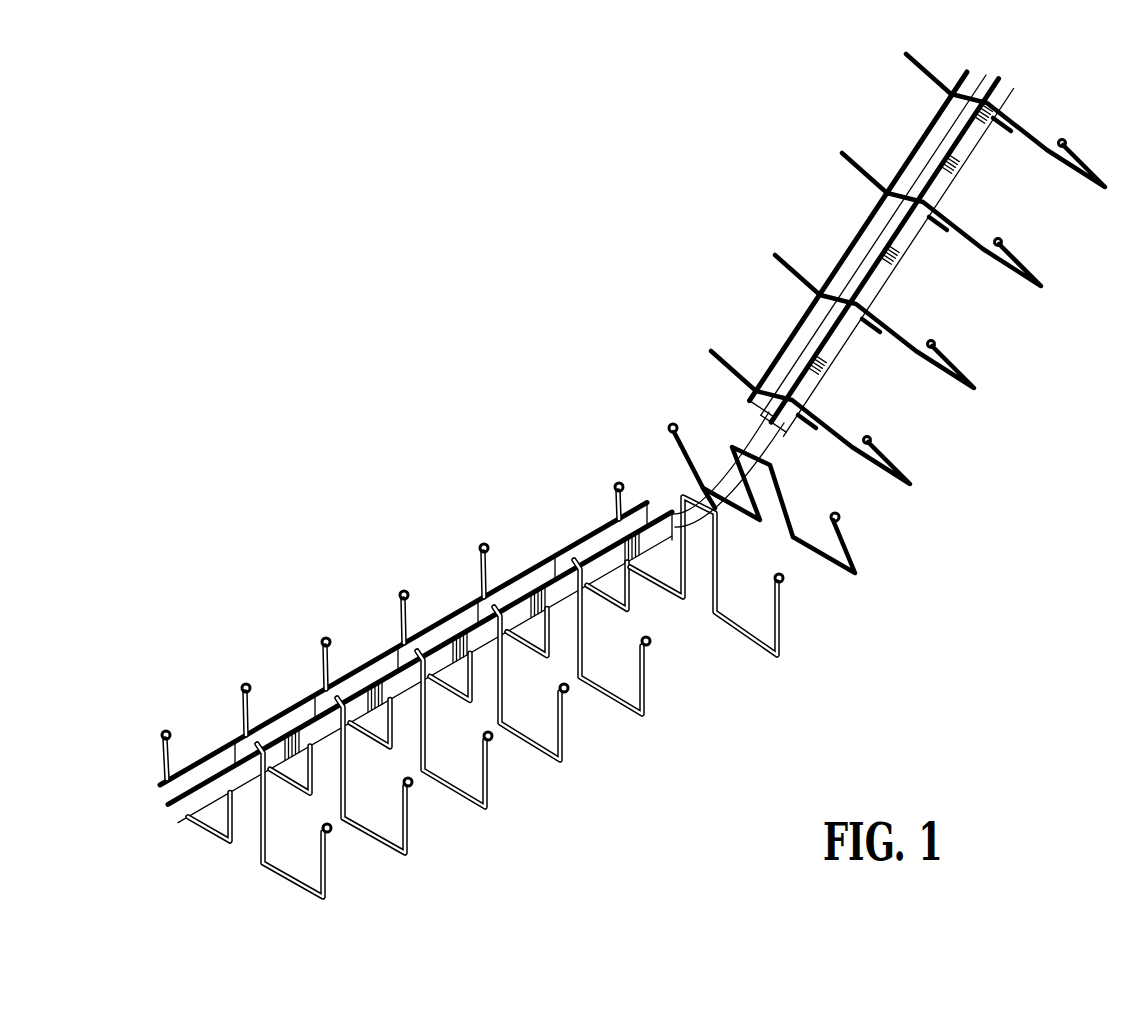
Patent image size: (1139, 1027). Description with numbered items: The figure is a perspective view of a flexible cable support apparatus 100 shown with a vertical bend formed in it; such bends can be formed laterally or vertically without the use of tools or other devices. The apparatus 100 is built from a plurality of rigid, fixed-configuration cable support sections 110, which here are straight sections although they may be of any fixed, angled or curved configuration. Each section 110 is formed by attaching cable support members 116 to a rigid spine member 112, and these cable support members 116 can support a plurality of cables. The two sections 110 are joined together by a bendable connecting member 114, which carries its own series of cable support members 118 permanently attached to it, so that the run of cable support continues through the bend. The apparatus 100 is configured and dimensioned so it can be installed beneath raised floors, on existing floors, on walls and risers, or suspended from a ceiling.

The flexible cable support apparatus 100 is at (648, 471).
The cable support section 110 is at (648, 471).
The rigid spine member 112 is at (940, 123).
The bendable connecting member 114 is at (673, 380).
The cable support member 116 is at (1027, 268).
The cable support member 118 is at (782, 613).